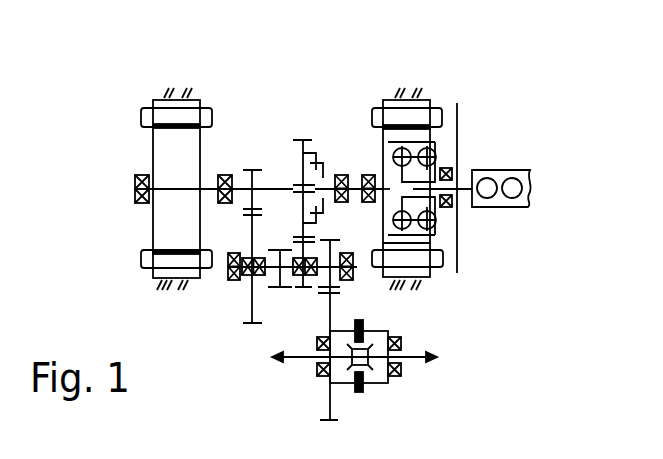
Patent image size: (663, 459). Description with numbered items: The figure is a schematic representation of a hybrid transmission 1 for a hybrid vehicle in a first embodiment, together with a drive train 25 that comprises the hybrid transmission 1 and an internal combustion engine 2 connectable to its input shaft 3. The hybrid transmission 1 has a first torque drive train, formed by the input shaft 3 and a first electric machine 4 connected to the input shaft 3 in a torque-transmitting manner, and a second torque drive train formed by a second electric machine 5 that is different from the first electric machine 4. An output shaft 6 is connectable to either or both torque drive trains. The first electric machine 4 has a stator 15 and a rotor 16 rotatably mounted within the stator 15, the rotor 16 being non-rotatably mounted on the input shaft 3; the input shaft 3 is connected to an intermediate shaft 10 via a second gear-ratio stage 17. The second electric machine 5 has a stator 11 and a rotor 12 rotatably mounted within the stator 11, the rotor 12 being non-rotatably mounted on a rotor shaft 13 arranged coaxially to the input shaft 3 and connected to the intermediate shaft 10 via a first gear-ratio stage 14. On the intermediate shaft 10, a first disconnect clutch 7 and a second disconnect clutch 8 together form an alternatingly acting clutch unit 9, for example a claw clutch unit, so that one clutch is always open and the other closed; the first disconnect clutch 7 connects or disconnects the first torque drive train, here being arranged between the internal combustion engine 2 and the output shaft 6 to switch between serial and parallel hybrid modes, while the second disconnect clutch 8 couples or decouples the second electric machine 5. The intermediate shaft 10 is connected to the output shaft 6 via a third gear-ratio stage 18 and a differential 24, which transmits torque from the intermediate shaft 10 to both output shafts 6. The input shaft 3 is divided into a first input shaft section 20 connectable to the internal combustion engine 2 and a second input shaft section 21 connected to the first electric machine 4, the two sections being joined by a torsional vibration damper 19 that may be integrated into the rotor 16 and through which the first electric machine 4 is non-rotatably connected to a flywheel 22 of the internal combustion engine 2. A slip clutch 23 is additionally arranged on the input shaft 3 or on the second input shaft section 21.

The hybrid transmission 1 is at (461, 74).
The internal combustion engine 2 is at (512, 194).
The input shaft 3 is at (462, 192).
The first electric machine 4 is at (400, 76).
The second electric machine 5 is at (177, 82).
The output shaft 6 is at (425, 358).
The first disconnect clutch 7 is at (278, 292).
The second disconnect clutch 8 is at (280, 268).
The clutch unit 9 is at (305, 266).
The intermediate shaft 10 is at (322, 271).
The stator 11 is at (195, 112).
The rotor 12 is at (172, 146).
The rotor shaft 13 is at (200, 190).
The first gear-ratio stage 14 is at (238, 222).
The stator 15 is at (423, 107).
The rotor 16 is at (435, 155).
The second gear-ratio stage 17 is at (291, 227).
The third gear-ratio stage 18 is at (350, 295).
The torsional vibration damper 19 is at (455, 183).
The first input shaft section 20 is at (470, 170).
The second input shaft section 21 is at (339, 173).
The flywheel 22 is at (425, 138).
The slip clutch 23 is at (319, 136).
The differential 24 is at (391, 393).
The drive train 25 is at (548, 85).